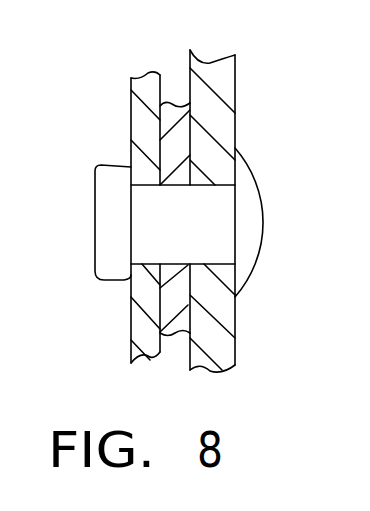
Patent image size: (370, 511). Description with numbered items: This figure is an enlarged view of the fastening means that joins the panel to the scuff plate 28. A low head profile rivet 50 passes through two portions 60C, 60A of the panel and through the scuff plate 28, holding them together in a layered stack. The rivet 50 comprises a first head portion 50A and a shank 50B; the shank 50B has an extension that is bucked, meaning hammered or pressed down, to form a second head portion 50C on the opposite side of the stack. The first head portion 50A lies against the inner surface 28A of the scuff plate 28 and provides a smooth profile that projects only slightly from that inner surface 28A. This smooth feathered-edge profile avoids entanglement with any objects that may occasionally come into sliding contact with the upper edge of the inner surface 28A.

The scuff plate 28 is at (221, 68).
The inner surface 28A is at (236, 322).
The low head profile rivet 50 is at (176, 219).
The first head portion 50A is at (263, 213).
The shank 50B is at (155, 253).
The second head portion 50C is at (95, 262).
The portion of panel 60A is at (175, 105).
The portion of panel 60C is at (131, 114).